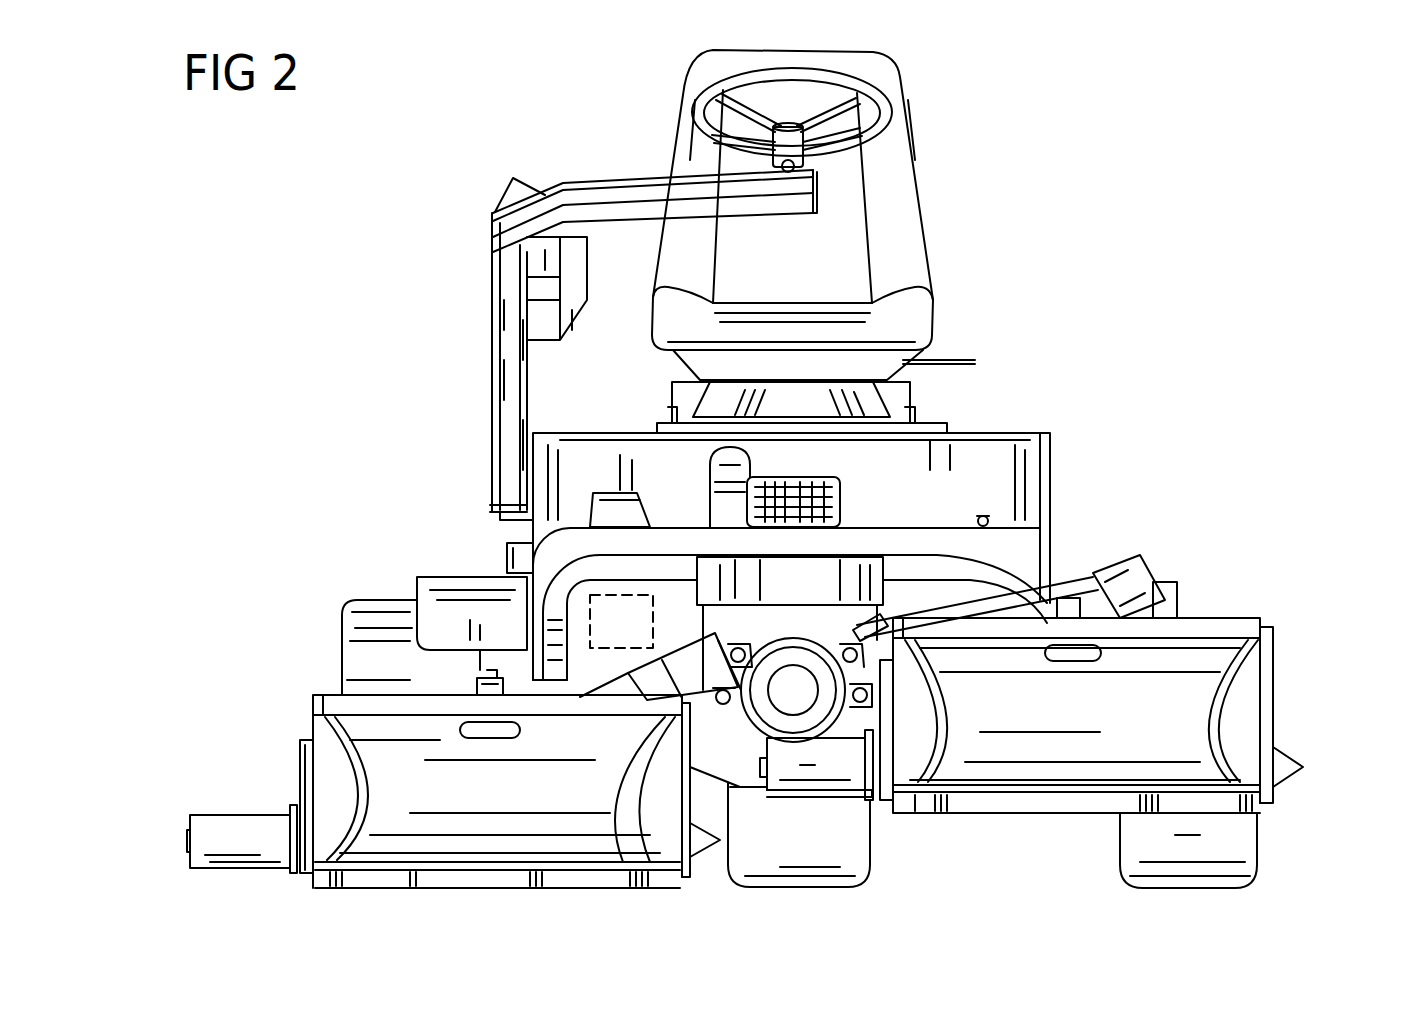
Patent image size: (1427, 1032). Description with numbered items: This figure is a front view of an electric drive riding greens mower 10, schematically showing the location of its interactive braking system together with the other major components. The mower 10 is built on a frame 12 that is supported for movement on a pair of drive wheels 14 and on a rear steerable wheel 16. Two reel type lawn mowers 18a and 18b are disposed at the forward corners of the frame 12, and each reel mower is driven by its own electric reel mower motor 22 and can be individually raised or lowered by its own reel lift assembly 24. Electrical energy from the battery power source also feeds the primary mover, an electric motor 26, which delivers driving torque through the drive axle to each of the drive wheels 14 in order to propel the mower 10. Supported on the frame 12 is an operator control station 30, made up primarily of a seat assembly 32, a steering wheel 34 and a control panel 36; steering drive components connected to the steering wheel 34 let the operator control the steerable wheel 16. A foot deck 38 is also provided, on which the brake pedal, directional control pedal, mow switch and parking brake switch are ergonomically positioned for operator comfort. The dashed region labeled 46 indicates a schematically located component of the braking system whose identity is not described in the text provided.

The electric riding greens mower 10 is at (1045, 200).
The frame 12 is at (1048, 553).
The drive wheels 14 is at (347, 638).
The rear steerable wheel 16 is at (857, 861).
The reel type lawn mower 18a is at (1292, 658).
The reel type lawn mower 18b is at (290, 722).
The electric reel mower motor 22 is at (212, 830).
The reel lift assembly 24 is at (680, 688).
The electric motor 26 is at (775, 705).
The operator control station 30 is at (1005, 128).
The seat assembly 32 is at (905, 82).
The steering wheel 34 is at (693, 115).
The control panel 36 is at (512, 190).
The foot deck 38 is at (992, 518).
The control unit 46 is at (606, 622).